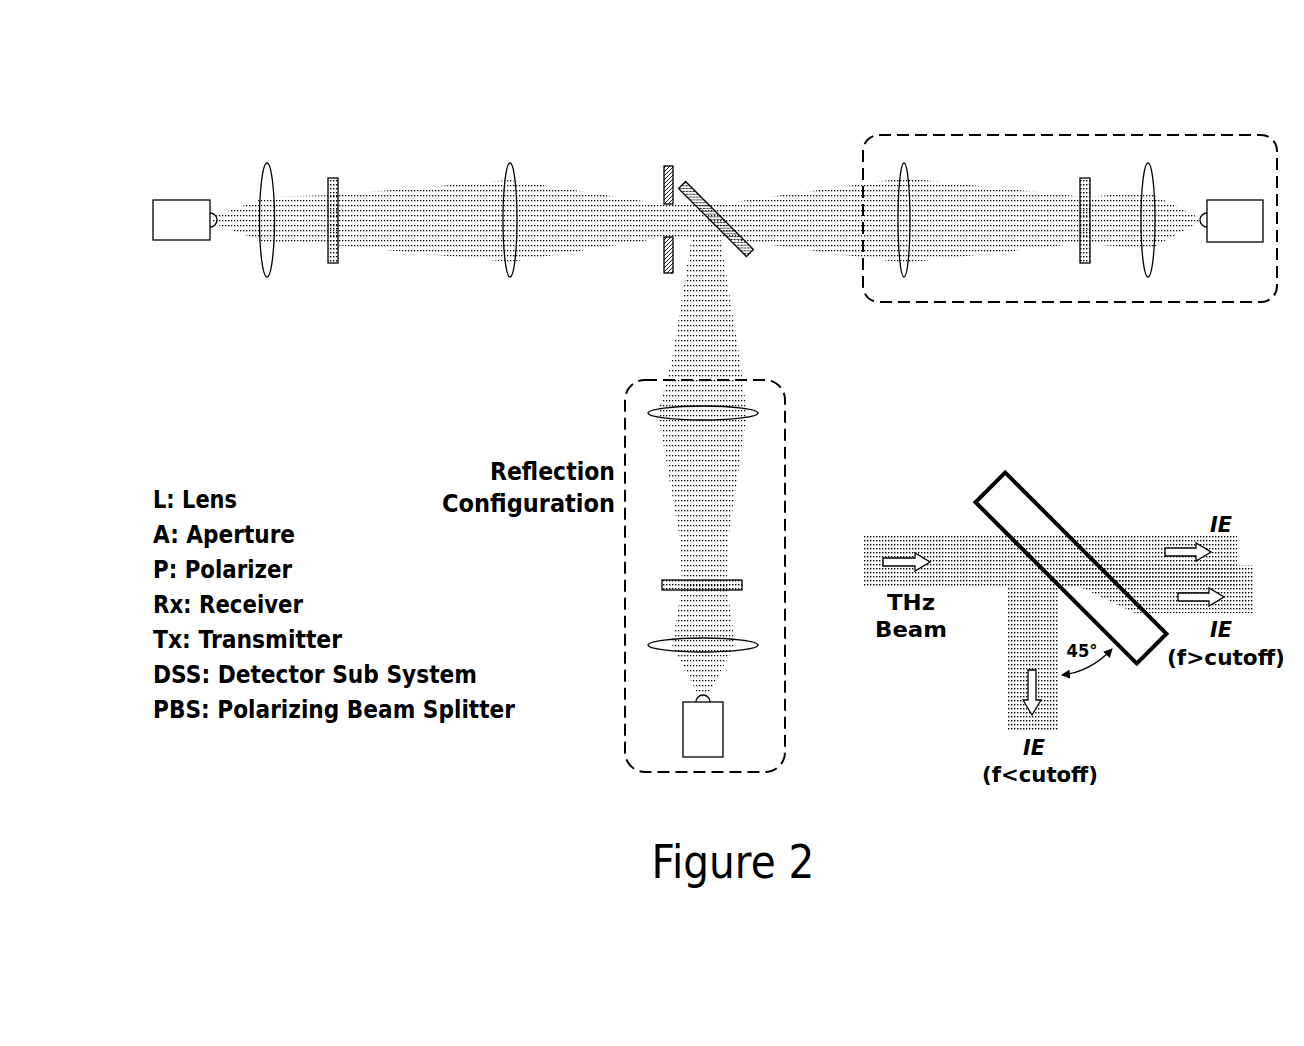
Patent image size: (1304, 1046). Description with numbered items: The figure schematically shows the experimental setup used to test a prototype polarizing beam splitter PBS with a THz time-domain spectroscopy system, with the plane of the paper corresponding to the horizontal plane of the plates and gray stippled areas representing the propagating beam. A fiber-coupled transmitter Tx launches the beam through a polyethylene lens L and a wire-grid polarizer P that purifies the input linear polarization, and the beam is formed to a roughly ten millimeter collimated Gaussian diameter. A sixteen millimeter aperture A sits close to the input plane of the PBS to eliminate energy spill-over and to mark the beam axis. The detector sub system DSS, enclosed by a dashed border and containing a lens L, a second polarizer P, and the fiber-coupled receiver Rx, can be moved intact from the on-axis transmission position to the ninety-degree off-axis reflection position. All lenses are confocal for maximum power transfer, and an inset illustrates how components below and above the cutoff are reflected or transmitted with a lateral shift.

The transmitter Tx is at (185, 220).
The receiver Rx is at (973, 478).
The lens L is at (511, 280).
The aperture A is at (667, 278).
The polarizer P is at (334, 269).
The polarizing beam splitter PBS is at (702, 192).
The detector sub system DSS is at (1070, 221).